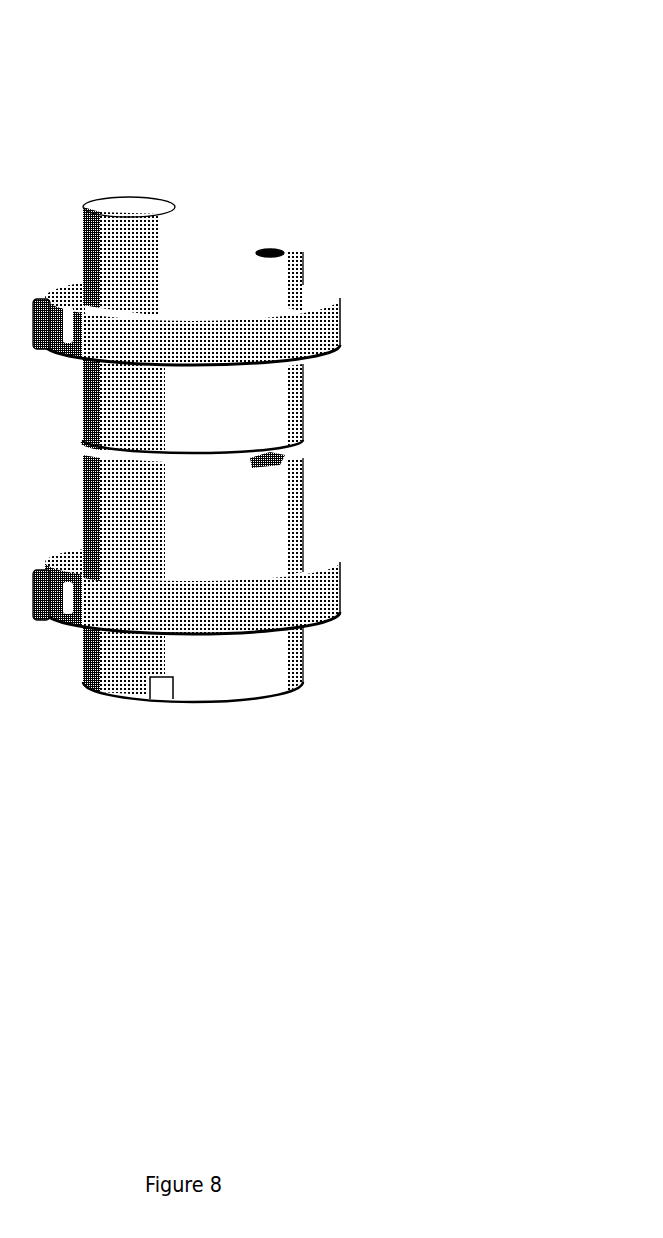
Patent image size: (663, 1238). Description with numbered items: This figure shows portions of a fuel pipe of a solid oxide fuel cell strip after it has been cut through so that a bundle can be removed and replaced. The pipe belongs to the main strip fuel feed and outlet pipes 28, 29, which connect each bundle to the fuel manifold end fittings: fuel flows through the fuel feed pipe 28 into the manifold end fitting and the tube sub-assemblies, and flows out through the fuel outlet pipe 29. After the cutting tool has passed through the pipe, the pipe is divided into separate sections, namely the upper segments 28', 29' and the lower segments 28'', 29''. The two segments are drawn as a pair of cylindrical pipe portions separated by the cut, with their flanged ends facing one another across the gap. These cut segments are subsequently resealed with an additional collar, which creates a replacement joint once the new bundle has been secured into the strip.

The fuel feed pipe 28 is at (287, 366).
The fuel outlet pipe 29 is at (287, 366).
The fuel feed pipe segment 28' is at (302, 391).
The fuel outlet pipe segment 29' is at (302, 391).
The fuel feed pipe segment 28'' is at (287, 577).
The fuel outlet pipe segment 29'' is at (287, 577).